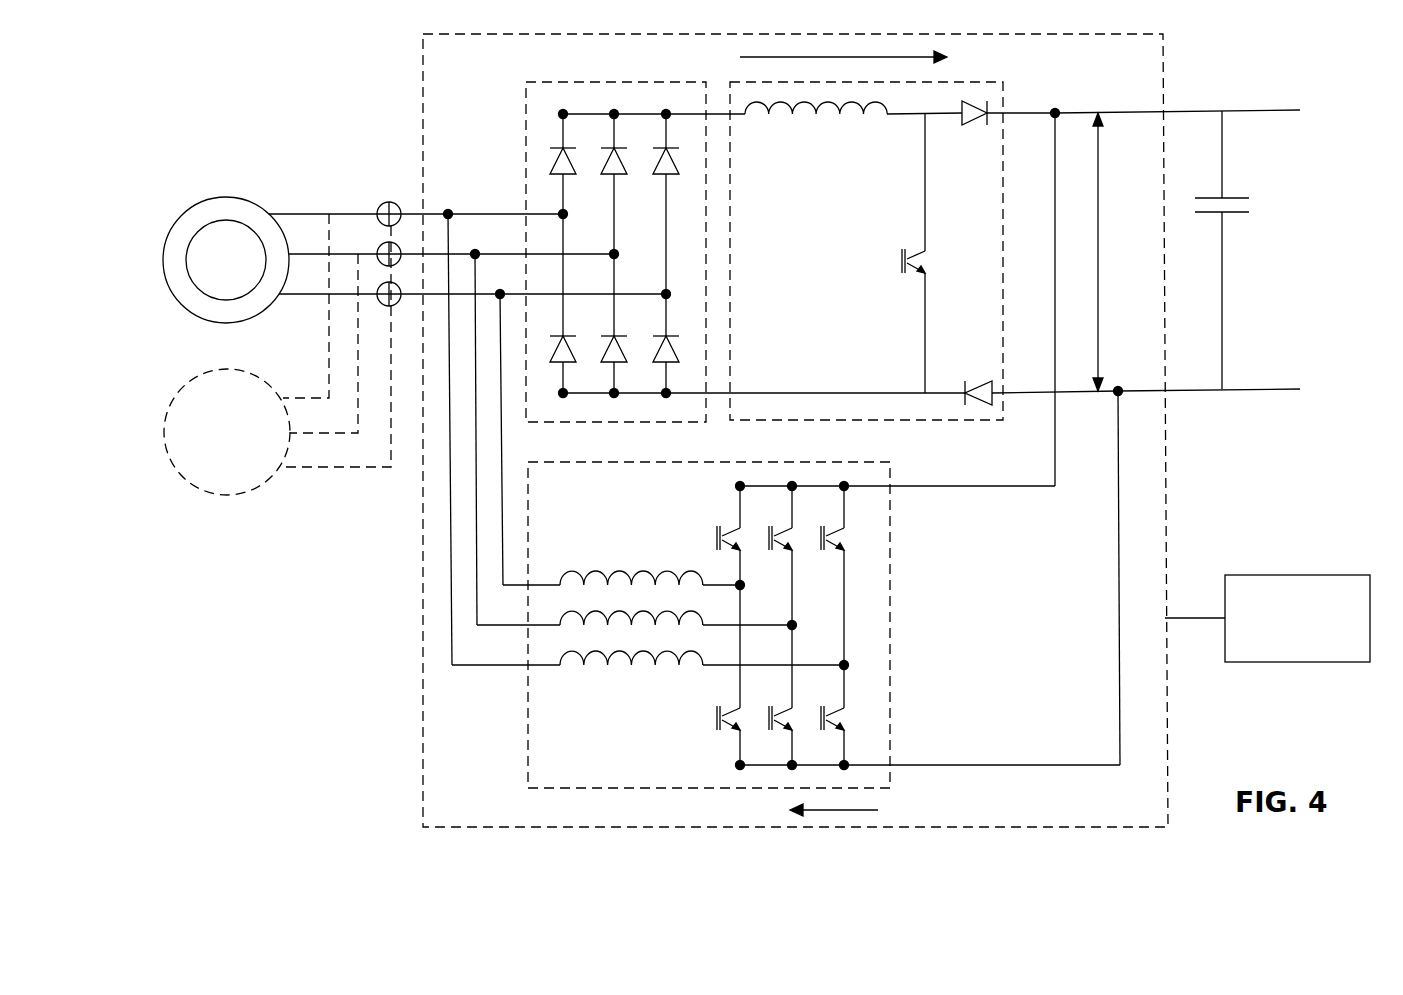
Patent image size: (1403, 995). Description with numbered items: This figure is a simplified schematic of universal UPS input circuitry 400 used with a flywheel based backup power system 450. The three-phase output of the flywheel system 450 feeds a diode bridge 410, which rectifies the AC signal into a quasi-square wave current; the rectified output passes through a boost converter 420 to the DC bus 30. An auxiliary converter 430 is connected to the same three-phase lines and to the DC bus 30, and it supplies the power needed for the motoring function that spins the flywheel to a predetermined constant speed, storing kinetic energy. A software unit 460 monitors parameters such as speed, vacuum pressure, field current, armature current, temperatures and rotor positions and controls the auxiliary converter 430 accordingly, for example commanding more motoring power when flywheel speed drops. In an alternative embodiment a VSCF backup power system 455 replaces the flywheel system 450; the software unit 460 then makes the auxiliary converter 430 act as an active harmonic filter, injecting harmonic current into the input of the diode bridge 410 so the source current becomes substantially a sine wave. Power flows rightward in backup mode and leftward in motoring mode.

The input circuitry 400 is at (1165, 478).
The diode bridge 410 is at (526, 125).
The boost converter 420 is at (1002, 95).
The auxiliary converter 430 is at (891, 585).
The flywheel based backup power system 450 is at (246, 320).
The VSCF backup power system 455 is at (250, 493).
The software unit 460 is at (1303, 575).
The DC bus 30 is at (1176, 252).